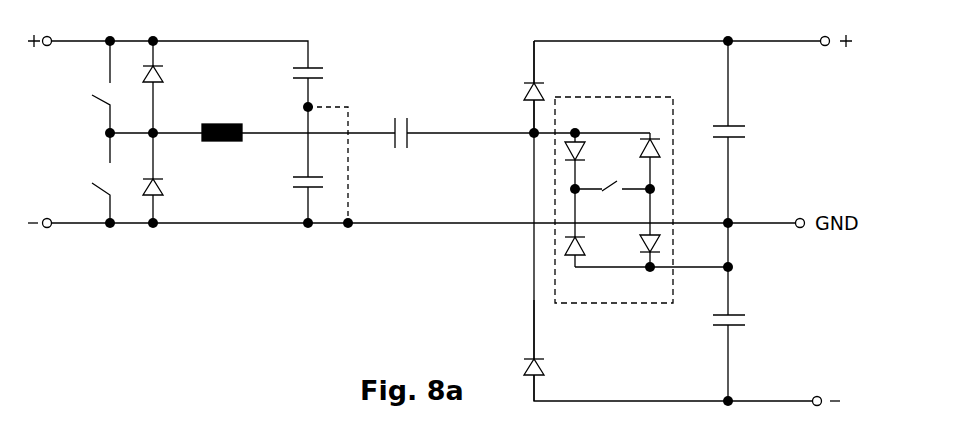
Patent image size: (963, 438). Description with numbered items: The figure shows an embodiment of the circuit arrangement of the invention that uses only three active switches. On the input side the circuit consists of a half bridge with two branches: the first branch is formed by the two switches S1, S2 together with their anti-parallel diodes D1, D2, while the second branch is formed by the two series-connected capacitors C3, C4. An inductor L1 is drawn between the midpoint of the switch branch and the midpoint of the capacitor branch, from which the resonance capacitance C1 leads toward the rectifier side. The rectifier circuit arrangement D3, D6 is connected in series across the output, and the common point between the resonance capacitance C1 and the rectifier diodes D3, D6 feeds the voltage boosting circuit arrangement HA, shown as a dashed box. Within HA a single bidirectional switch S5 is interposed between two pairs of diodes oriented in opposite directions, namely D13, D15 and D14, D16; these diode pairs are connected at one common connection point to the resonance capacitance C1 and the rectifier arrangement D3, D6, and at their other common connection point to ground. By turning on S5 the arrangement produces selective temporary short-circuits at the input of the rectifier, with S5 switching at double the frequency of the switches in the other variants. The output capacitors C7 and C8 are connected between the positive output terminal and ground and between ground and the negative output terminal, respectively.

The switch S1 is at (91, 87).
The switch S2 is at (89, 178).
The anti-parallel diode D1 is at (169, 87).
The anti-parallel diode D2 is at (169, 178).
The inductor L1 is at (222, 117).
The series-connected capacitor C3 is at (324, 73).
The series-connected capacitor C4 is at (290, 183).
The resonance capacitance C1 is at (417, 124).
The rectifier diode D3 is at (515, 87).
The rectifier diode D6 is at (519, 350).
The voltage boosting circuit arrangement HA is at (614, 187).
The diode D13 is at (577, 148).
The diode D14 is at (640, 148).
The bidirectional switch S5 is at (612, 173).
The diode D15 is at (576, 245).
The diode D16 is at (640, 245).
The capacitor C7 is at (746, 140).
The capacitor C8 is at (747, 335).